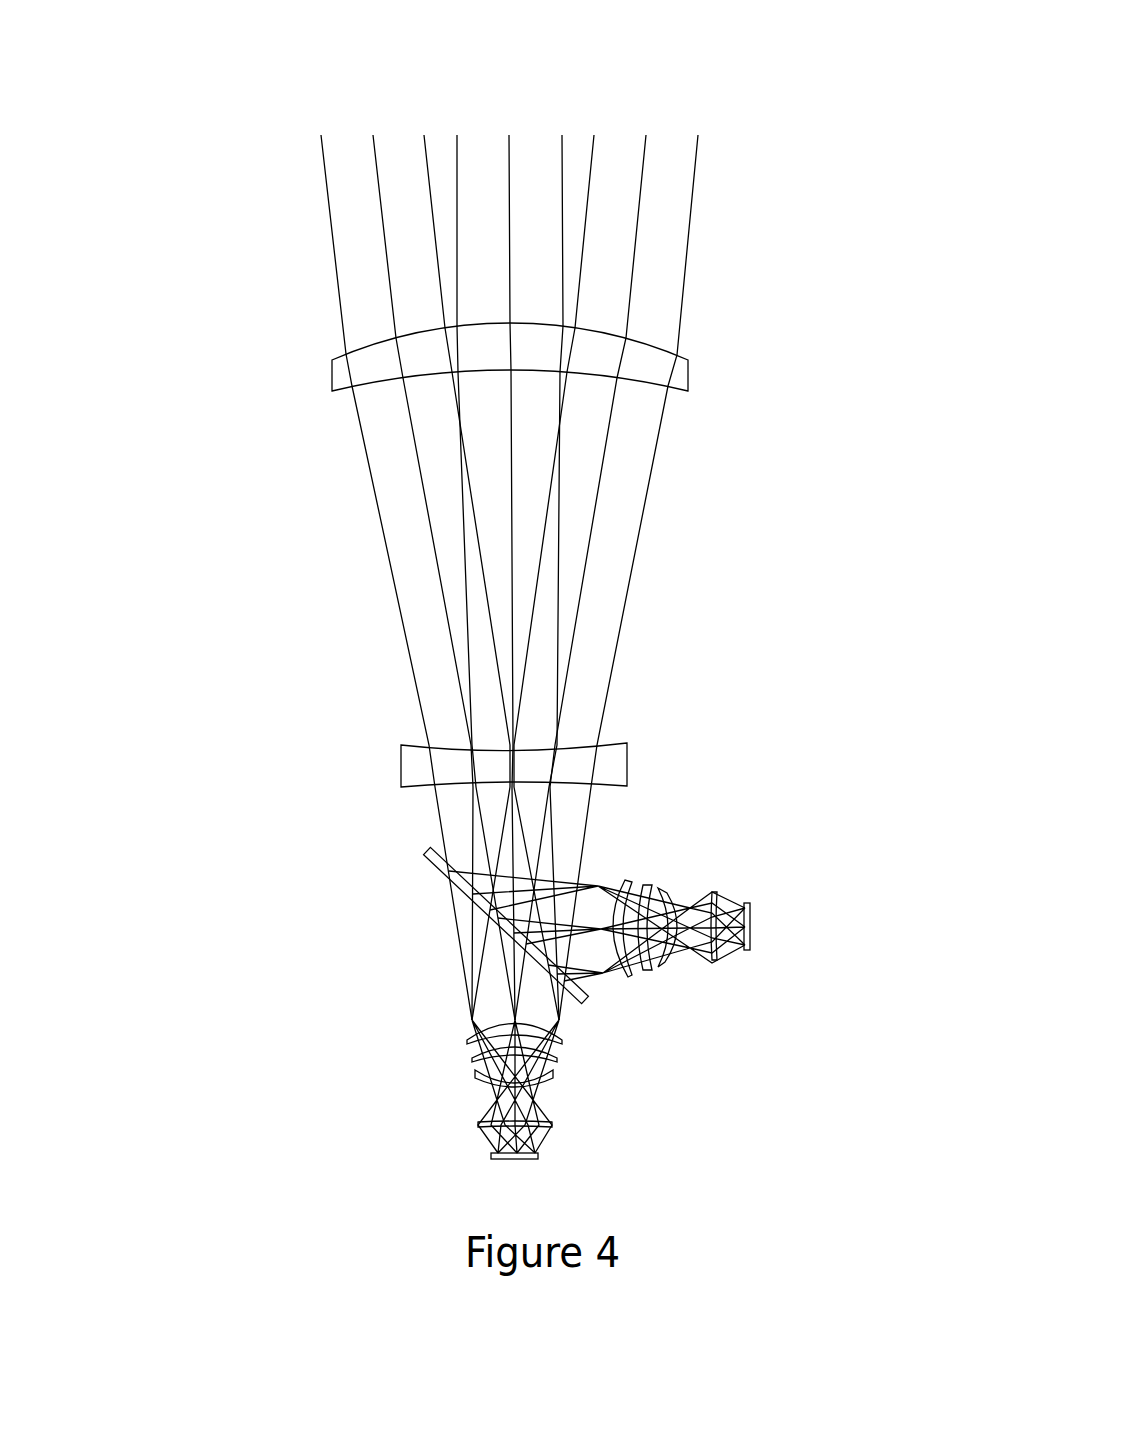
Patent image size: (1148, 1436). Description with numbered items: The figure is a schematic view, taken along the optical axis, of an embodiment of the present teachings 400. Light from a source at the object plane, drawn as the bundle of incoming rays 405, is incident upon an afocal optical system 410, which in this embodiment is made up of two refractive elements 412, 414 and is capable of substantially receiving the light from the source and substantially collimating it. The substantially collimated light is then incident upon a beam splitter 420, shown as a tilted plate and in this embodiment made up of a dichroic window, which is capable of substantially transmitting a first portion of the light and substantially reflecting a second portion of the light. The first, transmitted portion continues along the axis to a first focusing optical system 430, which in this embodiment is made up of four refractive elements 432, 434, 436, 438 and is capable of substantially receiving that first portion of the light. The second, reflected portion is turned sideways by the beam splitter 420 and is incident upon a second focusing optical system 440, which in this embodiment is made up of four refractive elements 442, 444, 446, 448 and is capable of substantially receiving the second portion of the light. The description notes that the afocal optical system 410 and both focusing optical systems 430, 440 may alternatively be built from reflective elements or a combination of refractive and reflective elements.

The embodiment of the present teachings 400 is at (172, 190).
The incoming light rays 405 is at (287, 108).
The afocal optical system 410 is at (713, 334).
The refractive element 412 is at (332, 378).
The refractive element 414 is at (401, 768).
The beam splitter 420 is at (432, 868).
The first focusing optical system 430 is at (452, 1020).
The refractive element 432 is at (563, 1040).
The refractive element 434 is at (558, 1060).
The refractive element 436 is at (554, 1075).
The refractive element 438 is at (553, 1125).
The second focusing optical system 440 is at (775, 987).
The refractive element 442 is at (626, 880).
The refractive element 444 is at (644, 885).
The refractive element 446 is at (661, 889).
The refractive element 448 is at (718, 961).